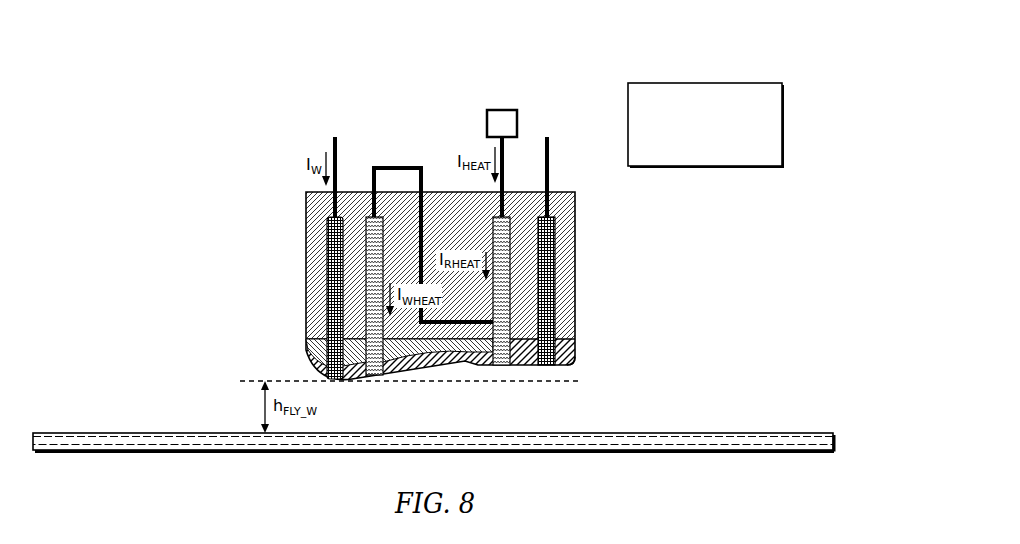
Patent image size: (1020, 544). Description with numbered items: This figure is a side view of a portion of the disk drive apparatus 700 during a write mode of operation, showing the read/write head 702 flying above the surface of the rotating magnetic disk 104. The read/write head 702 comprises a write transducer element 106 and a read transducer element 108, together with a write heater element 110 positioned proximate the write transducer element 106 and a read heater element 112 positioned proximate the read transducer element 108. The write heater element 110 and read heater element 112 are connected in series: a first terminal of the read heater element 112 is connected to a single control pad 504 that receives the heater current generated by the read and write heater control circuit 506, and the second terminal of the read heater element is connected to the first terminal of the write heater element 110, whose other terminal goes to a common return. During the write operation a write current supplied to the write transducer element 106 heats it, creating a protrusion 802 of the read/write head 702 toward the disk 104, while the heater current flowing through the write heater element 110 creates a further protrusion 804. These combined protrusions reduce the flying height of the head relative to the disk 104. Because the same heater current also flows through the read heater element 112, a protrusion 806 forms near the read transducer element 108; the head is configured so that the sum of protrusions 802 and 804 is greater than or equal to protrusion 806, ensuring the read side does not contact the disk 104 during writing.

The rotating magnetic disk 104 is at (78, 433).
The write transducer element 106 is at (328, 247).
The read transducer element 108 is at (556, 248).
The write heater element 110 is at (364, 230).
The read heater element 112 is at (494, 235).
The single control pad 504 is at (487, 115).
The read and write heater control circuit 506 is at (628, 100).
The disk drive apparatus 700 is at (258, 132).
The read/write head 702 is at (306, 207).
The protrusion 802 is at (308, 343).
The further protrusion 804 is at (298, 367).
The protrusion 806 is at (586, 353).